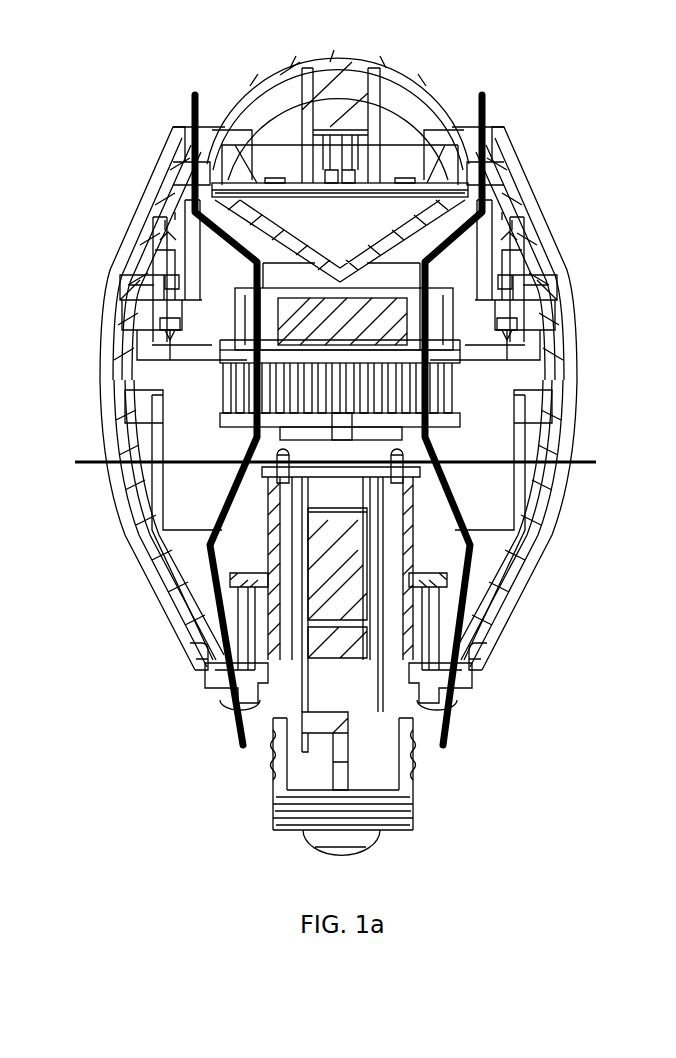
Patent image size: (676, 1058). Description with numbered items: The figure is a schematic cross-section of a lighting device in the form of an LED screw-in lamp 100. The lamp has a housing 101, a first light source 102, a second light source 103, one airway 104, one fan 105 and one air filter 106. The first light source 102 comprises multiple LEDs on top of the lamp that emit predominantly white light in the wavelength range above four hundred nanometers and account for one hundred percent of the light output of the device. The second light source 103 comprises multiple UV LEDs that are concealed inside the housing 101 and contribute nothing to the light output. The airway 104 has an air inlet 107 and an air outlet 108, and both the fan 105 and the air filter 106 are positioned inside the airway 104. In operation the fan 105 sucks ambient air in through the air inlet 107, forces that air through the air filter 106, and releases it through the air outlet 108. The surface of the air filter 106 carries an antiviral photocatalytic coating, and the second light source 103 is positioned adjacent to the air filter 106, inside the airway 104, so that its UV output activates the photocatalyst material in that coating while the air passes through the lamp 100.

The LED screw-in lamp 100 is at (335, 436).
The housing 101 is at (118, 262).
The first light source 102 is at (289, 182).
The second light source 103 is at (335, 462).
The airway 104 is at (341, 414).
The fan 105 is at (392, 322).
The air filter 106 is at (393, 385).
The air inlet 107 is at (225, 690).
The air outlet 108 is at (208, 143).